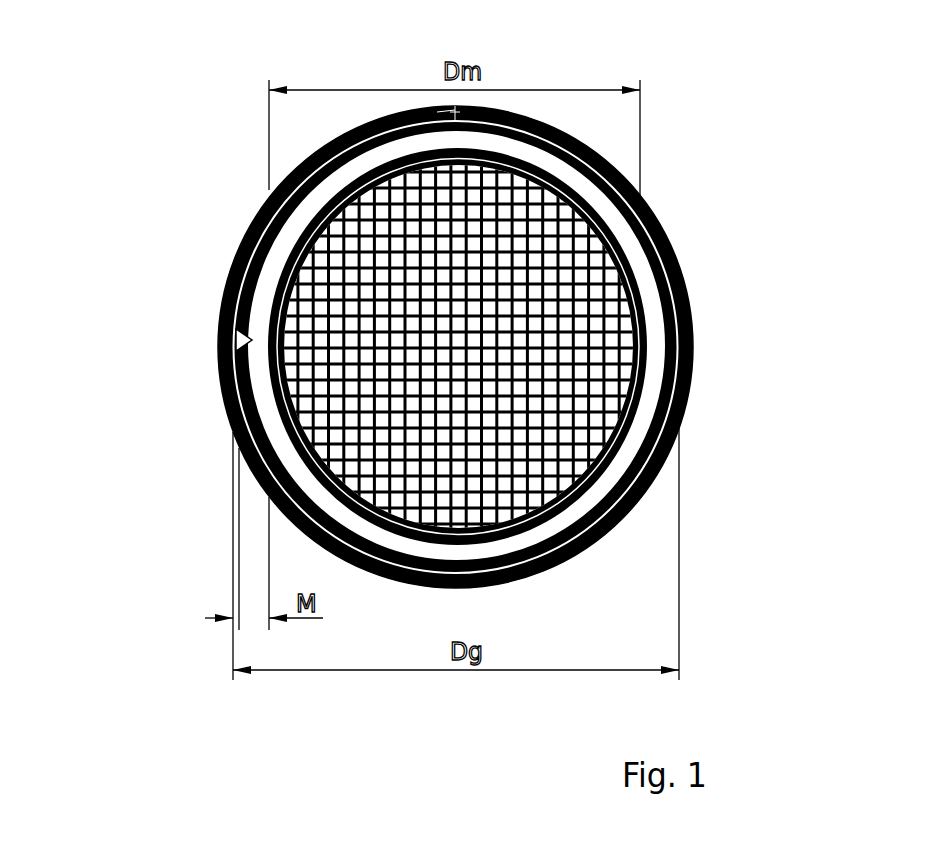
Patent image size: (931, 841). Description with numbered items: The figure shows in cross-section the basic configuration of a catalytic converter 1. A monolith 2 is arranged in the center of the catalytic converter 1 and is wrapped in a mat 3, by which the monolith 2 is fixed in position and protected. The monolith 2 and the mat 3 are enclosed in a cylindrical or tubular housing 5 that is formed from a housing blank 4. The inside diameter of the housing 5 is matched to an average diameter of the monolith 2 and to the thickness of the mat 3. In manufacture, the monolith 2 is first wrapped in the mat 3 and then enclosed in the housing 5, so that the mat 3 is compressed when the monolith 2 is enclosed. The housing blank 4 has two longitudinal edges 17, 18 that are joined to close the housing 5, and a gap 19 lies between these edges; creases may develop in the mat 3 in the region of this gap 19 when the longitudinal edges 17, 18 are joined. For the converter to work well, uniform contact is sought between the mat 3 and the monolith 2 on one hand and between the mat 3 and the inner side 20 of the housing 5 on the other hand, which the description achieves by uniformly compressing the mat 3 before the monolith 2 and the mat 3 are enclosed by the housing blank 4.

The catalytic converter 1 is at (432, 303).
The monolith 2 is at (557, 317).
The mat 3 is at (672, 325).
The housing blank 4 is at (678, 398).
The housing 5 is at (694, 426).
The longitudinal edge 17 is at (458, 110).
The longitudinal edge 18 is at (455, 108).
The gap 19 is at (440, 111).
The inner side 20 is at (236, 342).